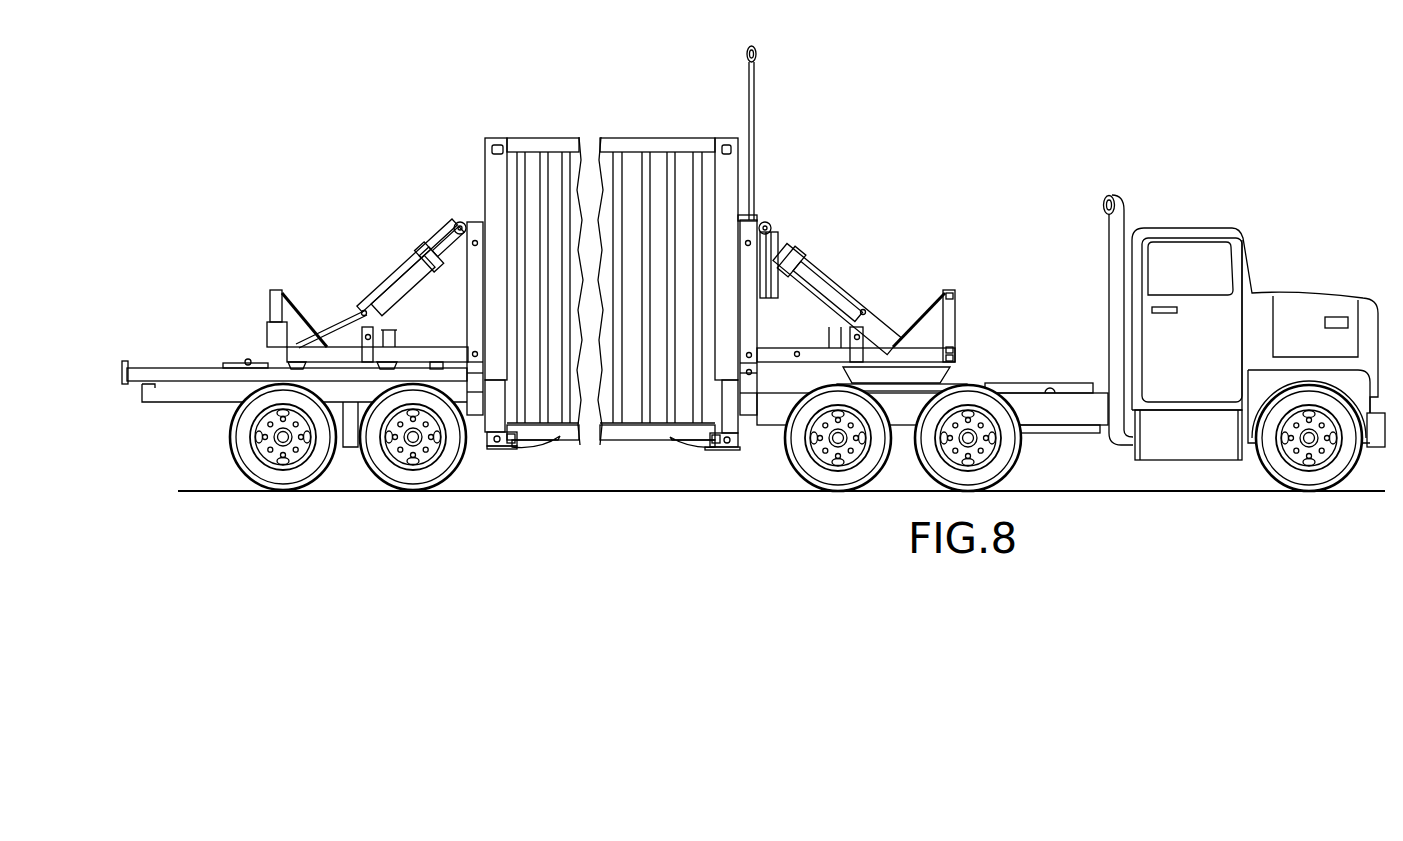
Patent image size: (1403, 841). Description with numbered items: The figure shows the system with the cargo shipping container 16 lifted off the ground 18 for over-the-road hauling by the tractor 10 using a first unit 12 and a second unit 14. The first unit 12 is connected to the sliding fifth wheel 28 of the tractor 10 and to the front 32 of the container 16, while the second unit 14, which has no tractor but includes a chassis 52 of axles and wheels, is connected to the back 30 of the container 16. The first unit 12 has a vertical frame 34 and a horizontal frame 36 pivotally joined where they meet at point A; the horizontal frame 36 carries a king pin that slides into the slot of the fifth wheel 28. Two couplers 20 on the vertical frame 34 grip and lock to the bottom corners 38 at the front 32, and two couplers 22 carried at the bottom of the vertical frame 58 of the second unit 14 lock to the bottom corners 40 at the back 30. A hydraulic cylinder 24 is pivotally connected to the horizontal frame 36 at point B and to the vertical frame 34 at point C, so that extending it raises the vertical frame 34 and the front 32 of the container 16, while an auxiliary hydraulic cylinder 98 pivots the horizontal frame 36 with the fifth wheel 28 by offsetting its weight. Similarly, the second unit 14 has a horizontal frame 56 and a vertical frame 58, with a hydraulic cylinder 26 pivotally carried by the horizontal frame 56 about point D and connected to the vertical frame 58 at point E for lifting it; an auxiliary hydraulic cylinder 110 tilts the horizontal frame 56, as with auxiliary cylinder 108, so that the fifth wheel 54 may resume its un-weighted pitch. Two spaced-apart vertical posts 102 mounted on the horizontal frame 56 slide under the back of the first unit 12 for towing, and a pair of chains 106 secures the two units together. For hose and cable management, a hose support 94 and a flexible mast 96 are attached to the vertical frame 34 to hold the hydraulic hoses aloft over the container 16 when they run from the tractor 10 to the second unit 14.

The tractor 10 is at (1286, 290).
The first unit 12 is at (932, 315).
The second unit 14 is at (368, 273).
The cargo shipping container 16 is at (605, 294).
The ground 18 is at (1063, 491).
The couplers 20 is at (760, 416).
The couplers 22 is at (469, 417).
The hydraulic cylinder 24 is at (818, 272).
The hydraulic cylinder 26 is at (399, 278).
The sliding fifth wheel 28 is at (952, 355).
The back of the cargo shipping container 30 is at (482, 150).
The front of the cargo shipping container 32 is at (740, 160).
The vertical frame 34 is at (746, 232).
The horizontal frame 36 is at (810, 350).
The bottom corners of the front of the container 38 is at (720, 456).
The bottom corners of the back of the container 40 is at (504, 458).
The chassis 52 is at (230, 401).
The fifth wheel 54 is at (848, 371).
The horizontal frame 56 is at (420, 350).
The vertical frame 58 is at (436, 246).
The hose support 94 is at (789, 250).
The flexible mast 96 is at (748, 80).
The auxiliary hydraulic cylinder 98 is at (955, 325).
The vertical posts 102 is at (132, 368).
The chains 106 is at (1018, 383).
The auxiliary cylinder 108 is at (822, 300).
The auxiliary hydraulic cylinder 110 is at (403, 305).
The pivot point A is at (753, 355).
The pivot point B is at (868, 318).
The pivot point C is at (769, 224).
The pivot point D is at (360, 315).
The pivot point E is at (461, 222).